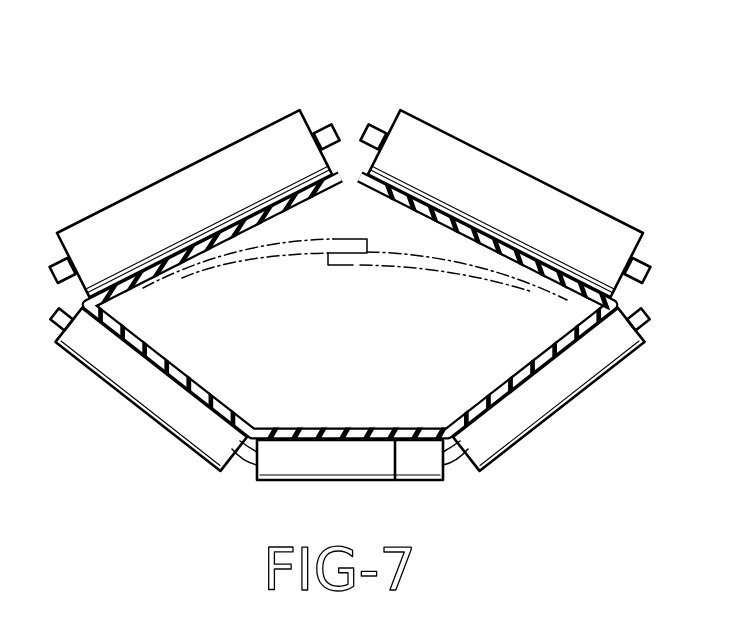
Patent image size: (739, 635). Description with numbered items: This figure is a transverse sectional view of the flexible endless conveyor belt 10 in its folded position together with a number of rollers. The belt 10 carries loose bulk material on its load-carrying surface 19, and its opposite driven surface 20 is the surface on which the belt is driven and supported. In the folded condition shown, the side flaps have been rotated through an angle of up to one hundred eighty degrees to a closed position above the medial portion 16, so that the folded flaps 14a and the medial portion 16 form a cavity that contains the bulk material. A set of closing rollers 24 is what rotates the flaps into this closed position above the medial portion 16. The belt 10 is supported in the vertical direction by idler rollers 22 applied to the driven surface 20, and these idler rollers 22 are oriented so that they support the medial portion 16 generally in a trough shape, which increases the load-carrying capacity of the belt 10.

The flexible endless conveyor belt 10 is at (385, 78).
The folded flaps 14a is at (237, 263).
The medial portion 16 is at (373, 430).
The load-carrying surface 19 is at (300, 428).
The driven surface 20 is at (395, 442).
The idler rollers 22 is at (148, 395).
The closing rollers 24 is at (192, 175).